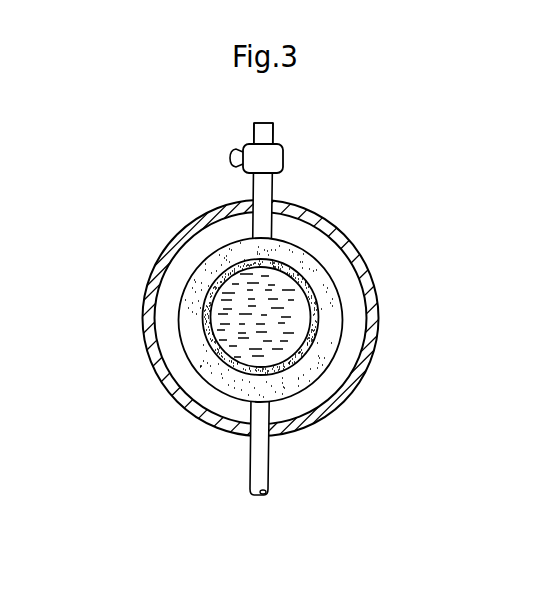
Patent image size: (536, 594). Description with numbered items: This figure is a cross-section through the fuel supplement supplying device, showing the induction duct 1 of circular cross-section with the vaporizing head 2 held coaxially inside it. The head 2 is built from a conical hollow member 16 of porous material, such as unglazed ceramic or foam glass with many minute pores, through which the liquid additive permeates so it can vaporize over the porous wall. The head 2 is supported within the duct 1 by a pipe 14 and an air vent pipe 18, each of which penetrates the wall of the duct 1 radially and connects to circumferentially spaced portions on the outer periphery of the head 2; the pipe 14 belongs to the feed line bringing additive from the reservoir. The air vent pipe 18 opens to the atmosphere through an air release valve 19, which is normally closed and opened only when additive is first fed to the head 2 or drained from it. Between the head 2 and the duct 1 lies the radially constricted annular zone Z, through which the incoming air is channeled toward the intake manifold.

The induction duct 1 is at (360, 243).
The annular zone Z is at (168, 275).
The vaporizing head 2 is at (205, 352).
The pipe 14 is at (248, 460).
The conical hollow member 16 is at (337, 300).
The air vent pipe 18 is at (275, 130).
The air release valve 19 is at (285, 157).